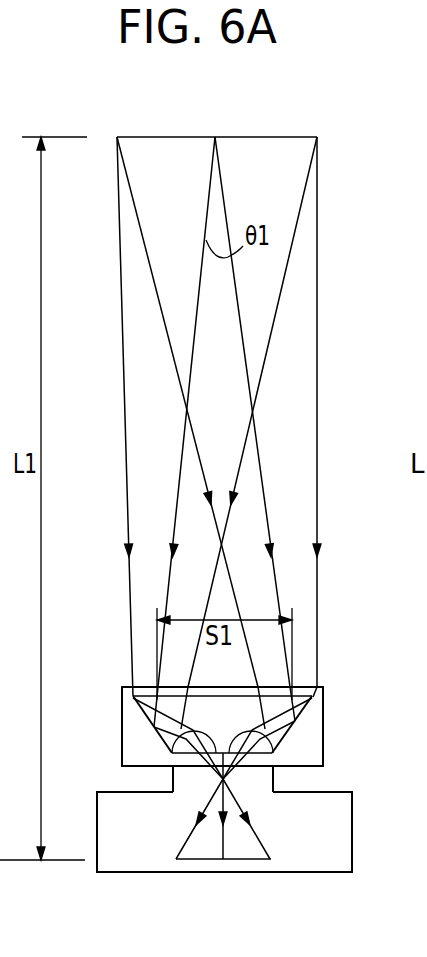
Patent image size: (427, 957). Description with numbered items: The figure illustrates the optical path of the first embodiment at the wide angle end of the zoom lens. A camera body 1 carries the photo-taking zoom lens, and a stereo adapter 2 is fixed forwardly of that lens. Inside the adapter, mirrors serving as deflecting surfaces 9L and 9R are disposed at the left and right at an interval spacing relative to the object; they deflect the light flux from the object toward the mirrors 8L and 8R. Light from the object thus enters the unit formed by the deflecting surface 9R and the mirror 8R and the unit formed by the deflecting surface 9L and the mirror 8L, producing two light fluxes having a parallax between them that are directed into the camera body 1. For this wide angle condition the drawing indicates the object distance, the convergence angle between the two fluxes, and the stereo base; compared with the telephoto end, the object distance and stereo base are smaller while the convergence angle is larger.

The camera body 1 is at (352, 835).
The stereo adapter 2 is at (323, 700).
The mirror 8L is at (186, 744).
The mirror 8R is at (275, 751).
The mirror as deflecting surface 9L is at (142, 707).
The mirror as deflecting surface 9R is at (308, 704).